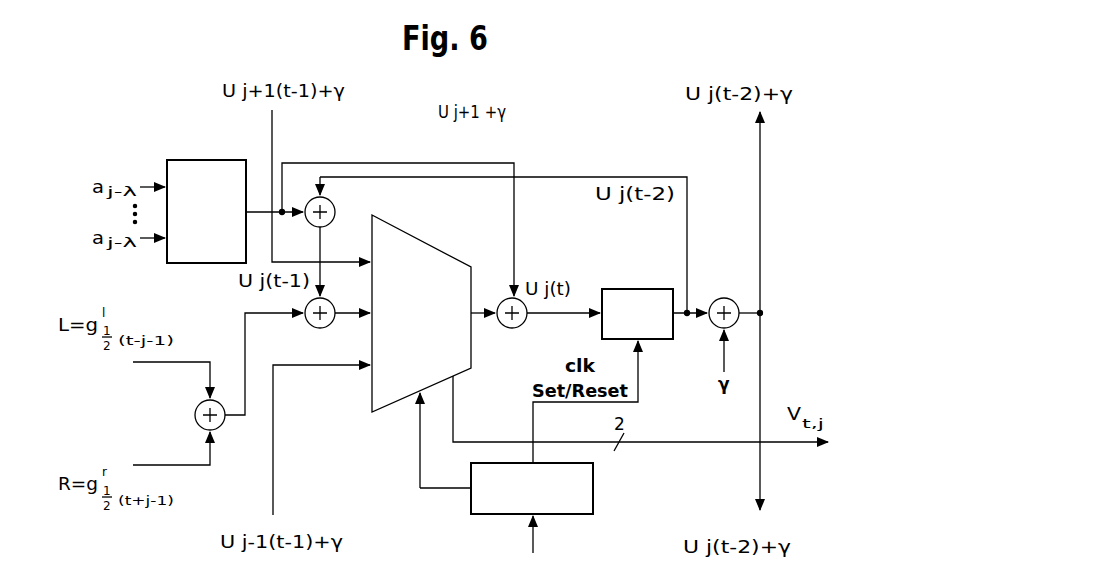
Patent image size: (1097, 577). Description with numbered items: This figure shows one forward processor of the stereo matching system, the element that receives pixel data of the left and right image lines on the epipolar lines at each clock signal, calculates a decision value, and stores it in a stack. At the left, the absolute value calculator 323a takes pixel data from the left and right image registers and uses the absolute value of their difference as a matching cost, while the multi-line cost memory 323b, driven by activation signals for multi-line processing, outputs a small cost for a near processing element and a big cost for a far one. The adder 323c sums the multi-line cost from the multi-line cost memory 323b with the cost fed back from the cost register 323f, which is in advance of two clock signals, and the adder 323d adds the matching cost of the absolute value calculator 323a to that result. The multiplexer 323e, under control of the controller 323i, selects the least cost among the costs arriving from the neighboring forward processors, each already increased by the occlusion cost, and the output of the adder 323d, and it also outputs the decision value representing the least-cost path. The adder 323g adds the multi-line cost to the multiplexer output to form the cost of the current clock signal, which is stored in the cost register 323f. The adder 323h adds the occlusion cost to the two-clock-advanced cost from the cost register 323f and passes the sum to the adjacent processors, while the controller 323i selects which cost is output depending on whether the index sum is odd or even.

The absolute value calculator 323a is at (196, 410).
The multi-line cost memory 323b is at (194, 160).
The adder 323c is at (335, 212).
The adder 323d is at (312, 327).
The multiplexer 323e is at (428, 244).
The cost register 323f is at (638, 289).
The adder 323g is at (512, 328).
The adder 323h is at (723, 291).
The controller 323i is at (593, 488).